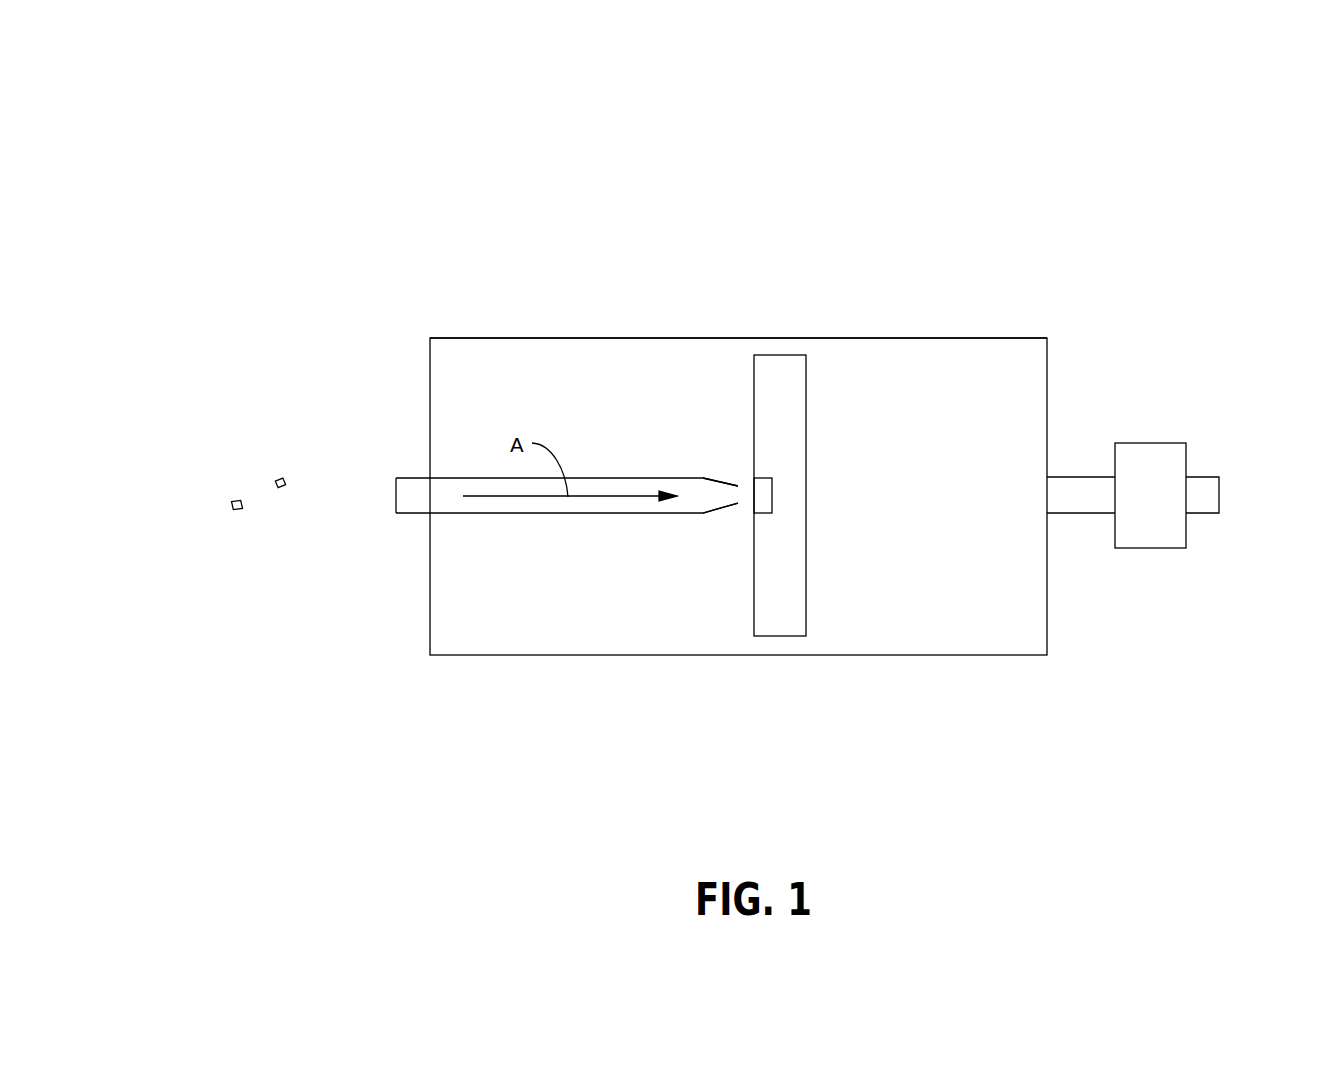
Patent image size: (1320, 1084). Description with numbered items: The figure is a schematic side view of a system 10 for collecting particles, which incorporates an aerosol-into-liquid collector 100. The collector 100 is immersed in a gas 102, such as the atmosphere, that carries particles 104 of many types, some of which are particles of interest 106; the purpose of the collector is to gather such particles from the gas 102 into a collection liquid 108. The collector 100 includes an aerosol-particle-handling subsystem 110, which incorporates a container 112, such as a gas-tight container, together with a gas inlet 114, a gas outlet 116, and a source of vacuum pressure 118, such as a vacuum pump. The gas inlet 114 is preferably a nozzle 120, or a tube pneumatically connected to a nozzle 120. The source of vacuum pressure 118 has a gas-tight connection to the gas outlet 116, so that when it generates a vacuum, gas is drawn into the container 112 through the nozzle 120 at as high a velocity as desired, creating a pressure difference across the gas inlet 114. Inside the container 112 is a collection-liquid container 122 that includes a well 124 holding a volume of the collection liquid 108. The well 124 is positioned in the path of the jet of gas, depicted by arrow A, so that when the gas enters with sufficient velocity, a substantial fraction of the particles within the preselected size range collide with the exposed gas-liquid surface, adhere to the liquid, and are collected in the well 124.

The system 10 is at (1092, 168).
The aerosol-into-liquid collector 100 is at (1092, 290).
The gas 102 is at (311, 295).
The particles 104 is at (212, 449).
The particles of interest 106 is at (279, 478).
The collection liquid 108 is at (763, 487).
The aerosol-particle-handling subsystem 110 is at (452, 708).
The container 112 is at (585, 337).
The gas inlet 114 is at (413, 515).
The gas outlet 116 is at (1221, 496).
The source of vacuum pressure 118 is at (1133, 443).
The nozzle 120 is at (721, 480).
The collection-liquid container 122 is at (808, 427).
The well 124 is at (737, 527).